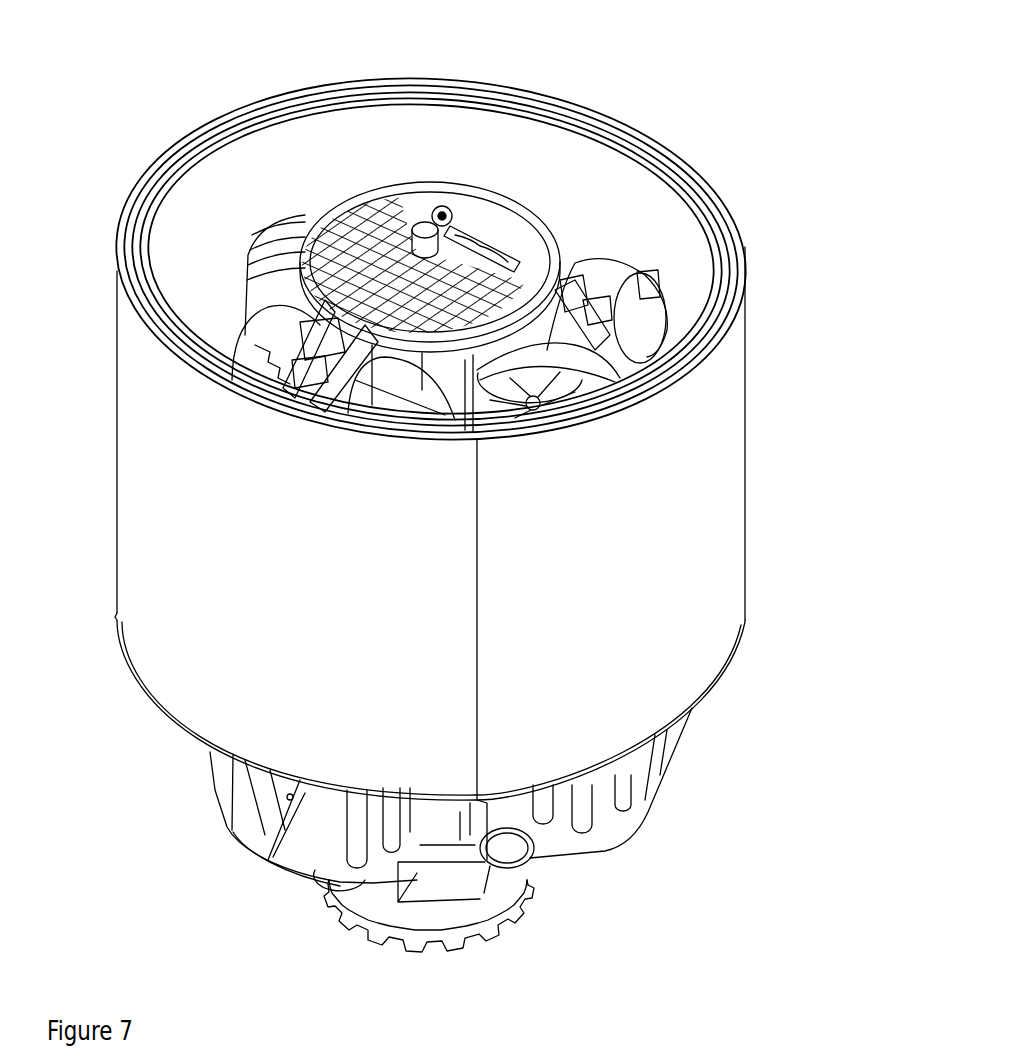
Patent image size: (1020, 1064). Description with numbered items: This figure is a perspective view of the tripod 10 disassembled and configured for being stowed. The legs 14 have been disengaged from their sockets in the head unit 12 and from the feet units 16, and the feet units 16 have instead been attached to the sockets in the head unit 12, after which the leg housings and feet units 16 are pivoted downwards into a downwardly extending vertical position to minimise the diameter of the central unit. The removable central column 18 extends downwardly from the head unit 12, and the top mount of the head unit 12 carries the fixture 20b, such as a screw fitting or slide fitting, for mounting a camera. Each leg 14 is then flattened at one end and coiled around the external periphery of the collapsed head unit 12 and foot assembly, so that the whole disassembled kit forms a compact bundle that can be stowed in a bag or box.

The tripod 10 is at (681, 116).
The head unit 12 is at (378, 192).
The legs 14 is at (710, 418).
The feet units 16 is at (630, 806).
The central column 18 is at (530, 895).
The fixture 20b is at (440, 228).